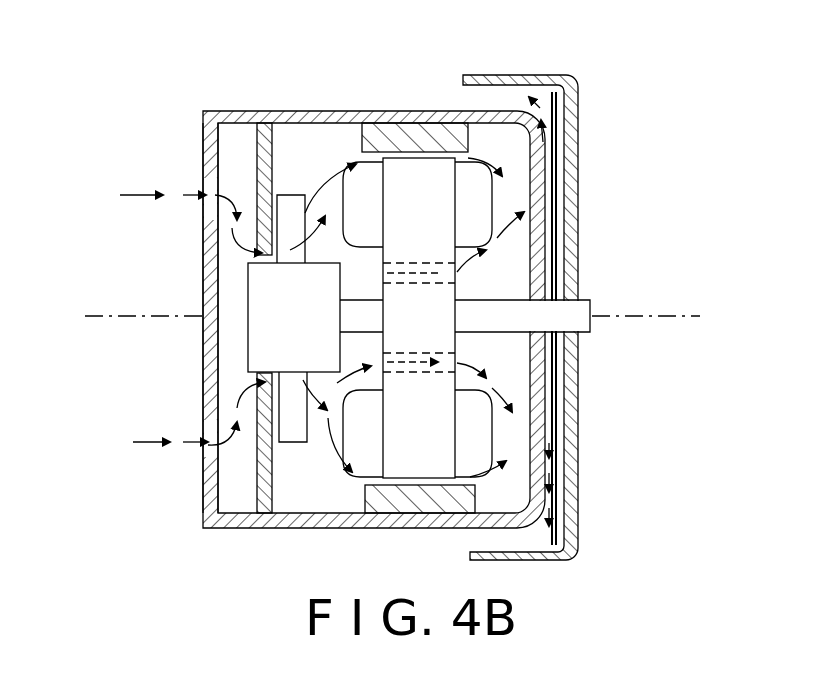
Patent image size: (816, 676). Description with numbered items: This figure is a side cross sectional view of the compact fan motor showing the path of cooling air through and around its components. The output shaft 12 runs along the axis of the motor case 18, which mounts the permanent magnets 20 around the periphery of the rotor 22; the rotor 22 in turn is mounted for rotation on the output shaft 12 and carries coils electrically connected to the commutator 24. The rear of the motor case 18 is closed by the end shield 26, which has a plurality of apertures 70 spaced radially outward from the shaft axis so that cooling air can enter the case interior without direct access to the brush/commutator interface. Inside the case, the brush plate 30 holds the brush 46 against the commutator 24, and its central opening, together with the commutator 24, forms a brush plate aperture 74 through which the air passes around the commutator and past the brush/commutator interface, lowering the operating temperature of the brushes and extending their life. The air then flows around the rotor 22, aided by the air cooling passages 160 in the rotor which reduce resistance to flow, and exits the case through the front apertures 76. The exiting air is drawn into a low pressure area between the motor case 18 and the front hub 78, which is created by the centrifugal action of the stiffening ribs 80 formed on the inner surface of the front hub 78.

The output shaft 12 is at (580, 307).
The motor case 18 is at (330, 111).
The permanent magnets 20 is at (378, 130).
The rotor 22 is at (425, 167).
The commutator 24 is at (262, 334).
The end shield 26 is at (203, 147).
The brush plate 30 is at (283, 123).
The brush 46 is at (297, 208).
The apertures 70 is at (208, 194).
The brush plate aperture 74 is at (258, 254).
The front apertures 76 is at (537, 210).
The front hub 78 is at (567, 75).
The stiffening ribs 80 is at (558, 254).
The air cooling passages 160 is at (452, 359).